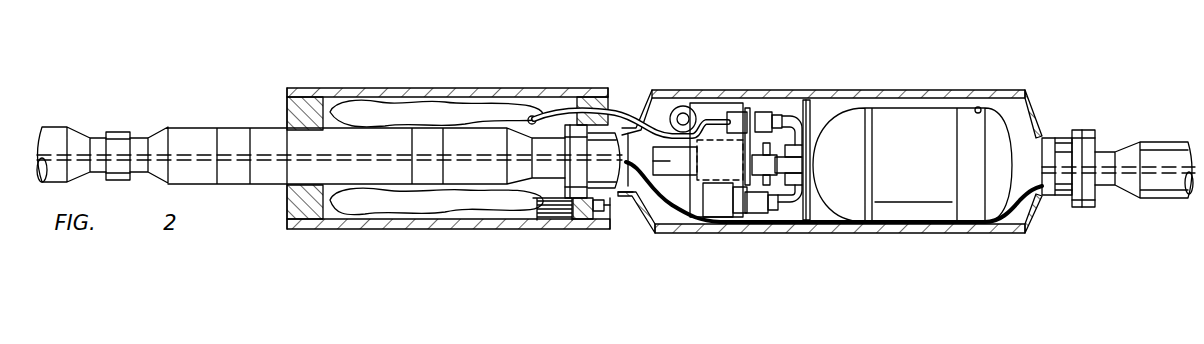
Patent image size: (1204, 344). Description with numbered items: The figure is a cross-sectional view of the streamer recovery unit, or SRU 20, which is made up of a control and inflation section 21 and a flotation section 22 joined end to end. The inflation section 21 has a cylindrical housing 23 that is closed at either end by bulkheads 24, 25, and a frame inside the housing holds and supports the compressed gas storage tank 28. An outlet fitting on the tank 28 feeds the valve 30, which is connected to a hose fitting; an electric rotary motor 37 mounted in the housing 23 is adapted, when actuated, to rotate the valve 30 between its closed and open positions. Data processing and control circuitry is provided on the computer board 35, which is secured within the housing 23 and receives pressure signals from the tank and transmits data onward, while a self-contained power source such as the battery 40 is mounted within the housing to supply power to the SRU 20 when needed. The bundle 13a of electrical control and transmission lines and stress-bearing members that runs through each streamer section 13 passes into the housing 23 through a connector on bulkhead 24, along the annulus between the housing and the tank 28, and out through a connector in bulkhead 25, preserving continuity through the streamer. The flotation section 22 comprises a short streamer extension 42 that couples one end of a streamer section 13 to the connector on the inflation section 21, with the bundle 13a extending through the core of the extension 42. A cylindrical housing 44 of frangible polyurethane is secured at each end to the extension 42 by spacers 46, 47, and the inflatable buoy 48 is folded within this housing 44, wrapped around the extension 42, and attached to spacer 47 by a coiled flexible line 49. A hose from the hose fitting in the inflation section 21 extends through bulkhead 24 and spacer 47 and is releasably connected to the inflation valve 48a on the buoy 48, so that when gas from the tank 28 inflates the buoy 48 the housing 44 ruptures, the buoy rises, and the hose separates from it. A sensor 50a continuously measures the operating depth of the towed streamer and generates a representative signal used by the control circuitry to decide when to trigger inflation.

The streamer section 13 is at (60, 126).
The bundle 13a is at (264, 170).
The streamer recovery unit 20 is at (672, 144).
The control and inflation section 21 is at (814, 138).
The flotation section 22 is at (438, 154).
The cylindrical housing 23 is at (894, 92).
The bulkhead 24 is at (644, 98).
The bulkhead 25 is at (1046, 133).
The compressed gas storage tank 28 is at (888, 173).
The valve 30 is at (808, 166).
The computer board 35 is at (716, 110).
The electric rotary motor 37 is at (704, 173).
The battery 40 is at (697, 182).
The streamer extension 42 is at (188, 128).
The cylindrical housing 44 is at (398, 226).
The spacer 46 is at (286, 106).
The spacer 47 is at (632, 110).
The inflatable buoy 48 is at (432, 212).
The inflation valve 48a is at (534, 116).
The coiled flexible line 49 is at (560, 224).
The sensor 50a is at (597, 213).